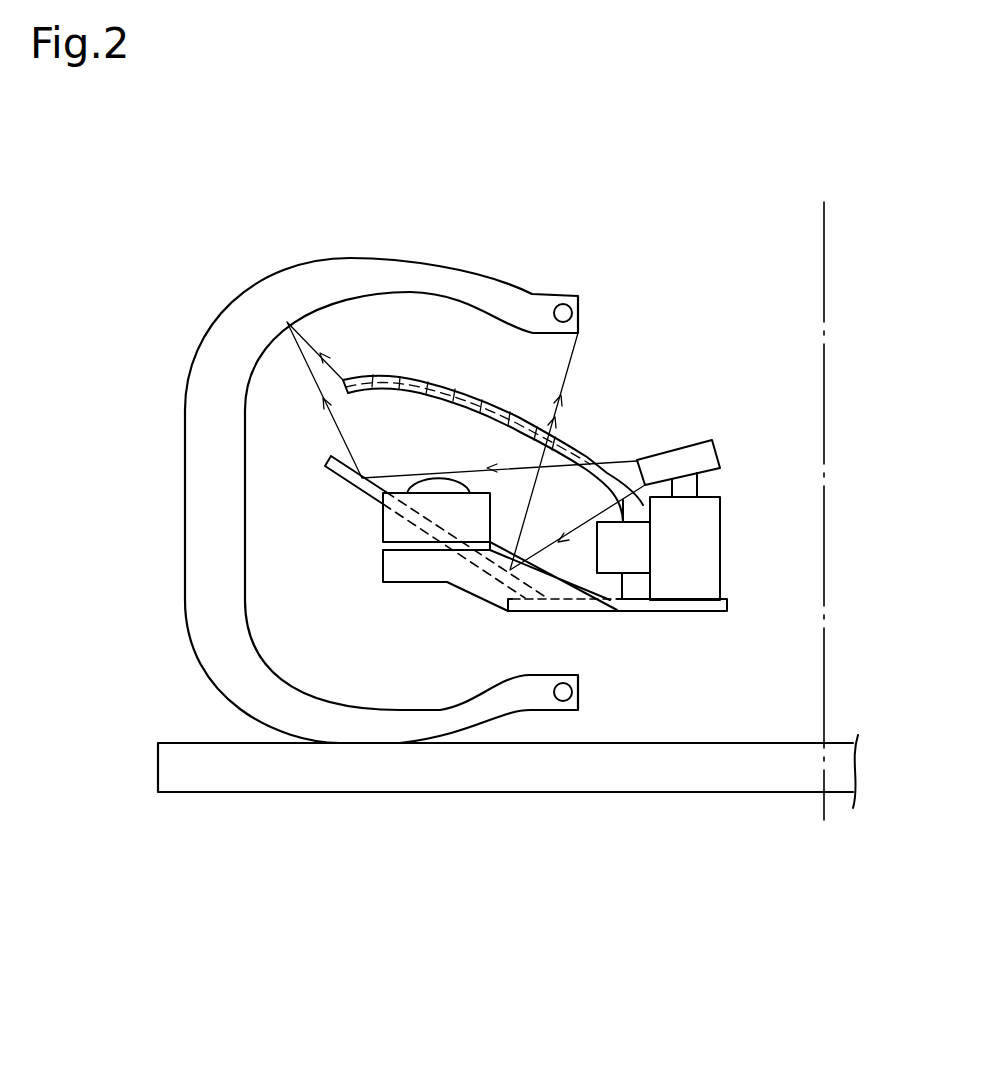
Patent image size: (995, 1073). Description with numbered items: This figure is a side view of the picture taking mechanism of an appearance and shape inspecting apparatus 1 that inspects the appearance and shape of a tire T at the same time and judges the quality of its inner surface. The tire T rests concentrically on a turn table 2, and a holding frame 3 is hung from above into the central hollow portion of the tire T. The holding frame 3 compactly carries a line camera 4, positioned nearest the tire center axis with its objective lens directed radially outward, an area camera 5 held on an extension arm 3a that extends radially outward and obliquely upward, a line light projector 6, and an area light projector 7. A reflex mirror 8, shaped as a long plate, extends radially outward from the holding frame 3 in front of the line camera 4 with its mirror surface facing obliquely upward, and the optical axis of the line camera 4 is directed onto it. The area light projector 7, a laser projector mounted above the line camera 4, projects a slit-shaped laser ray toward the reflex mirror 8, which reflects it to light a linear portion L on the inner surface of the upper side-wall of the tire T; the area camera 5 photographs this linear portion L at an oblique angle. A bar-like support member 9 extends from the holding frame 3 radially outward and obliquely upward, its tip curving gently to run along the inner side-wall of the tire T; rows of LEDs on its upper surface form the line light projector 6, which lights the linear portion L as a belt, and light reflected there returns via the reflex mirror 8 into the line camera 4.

The appearance and shape inspecting apparatus 1 is at (641, 362).
The turn table 2 is at (403, 793).
The holding frame 3 is at (648, 612).
The extension arm 3a is at (467, 572).
The line camera 4 is at (720, 537).
The area camera 5 is at (383, 520).
The line light projector 6 is at (472, 397).
The area light projector 7 is at (691, 447).
The reflex mirror 8 is at (363, 492).
The bar-like support member 9 is at (440, 403).
The tire T is at (213, 294).
The linear portion L is at (437, 292).